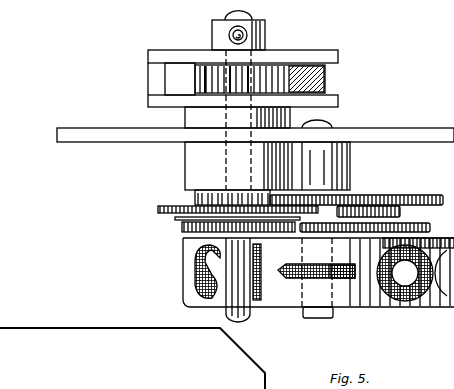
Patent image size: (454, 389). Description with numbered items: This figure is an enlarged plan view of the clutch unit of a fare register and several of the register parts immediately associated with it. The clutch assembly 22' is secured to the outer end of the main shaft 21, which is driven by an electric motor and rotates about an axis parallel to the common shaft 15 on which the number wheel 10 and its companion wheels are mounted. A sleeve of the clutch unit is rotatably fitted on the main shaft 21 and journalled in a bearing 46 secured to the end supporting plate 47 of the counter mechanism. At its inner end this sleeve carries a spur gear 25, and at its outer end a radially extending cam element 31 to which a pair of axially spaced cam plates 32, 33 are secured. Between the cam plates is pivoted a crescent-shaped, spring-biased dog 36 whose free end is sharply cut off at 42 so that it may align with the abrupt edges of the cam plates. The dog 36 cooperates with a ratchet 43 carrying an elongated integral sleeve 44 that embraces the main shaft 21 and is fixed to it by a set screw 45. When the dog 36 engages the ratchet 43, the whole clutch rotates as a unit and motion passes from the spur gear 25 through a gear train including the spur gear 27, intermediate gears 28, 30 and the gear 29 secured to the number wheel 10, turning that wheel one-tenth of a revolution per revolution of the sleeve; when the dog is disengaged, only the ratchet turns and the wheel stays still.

The number wheel 10 is at (275, 300).
The common shaft 15 is at (312, 315).
The main shaft 21 is at (246, 320).
The clutch assembly 22' is at (125, 72).
The spur gear 25 is at (205, 193).
The spur gear 27 is at (150, 190).
The intermediate gear 28 is at (424, 197).
The gear 29 is at (402, 212).
The intermediate gear 30 is at (183, 229).
The cam element 31 is at (200, 113).
The cam plate 32 is at (340, 100).
The cam plate 33 is at (340, 56).
The dog 36 is at (326, 78).
The free edge 42 is at (171, 82).
The ratchet 43 is at (215, 78).
The sleeve 44 is at (265, 33).
The set screw 45 is at (229, 33).
The bearing 46 is at (190, 150).
The end supporting plate 47 is at (105, 339).